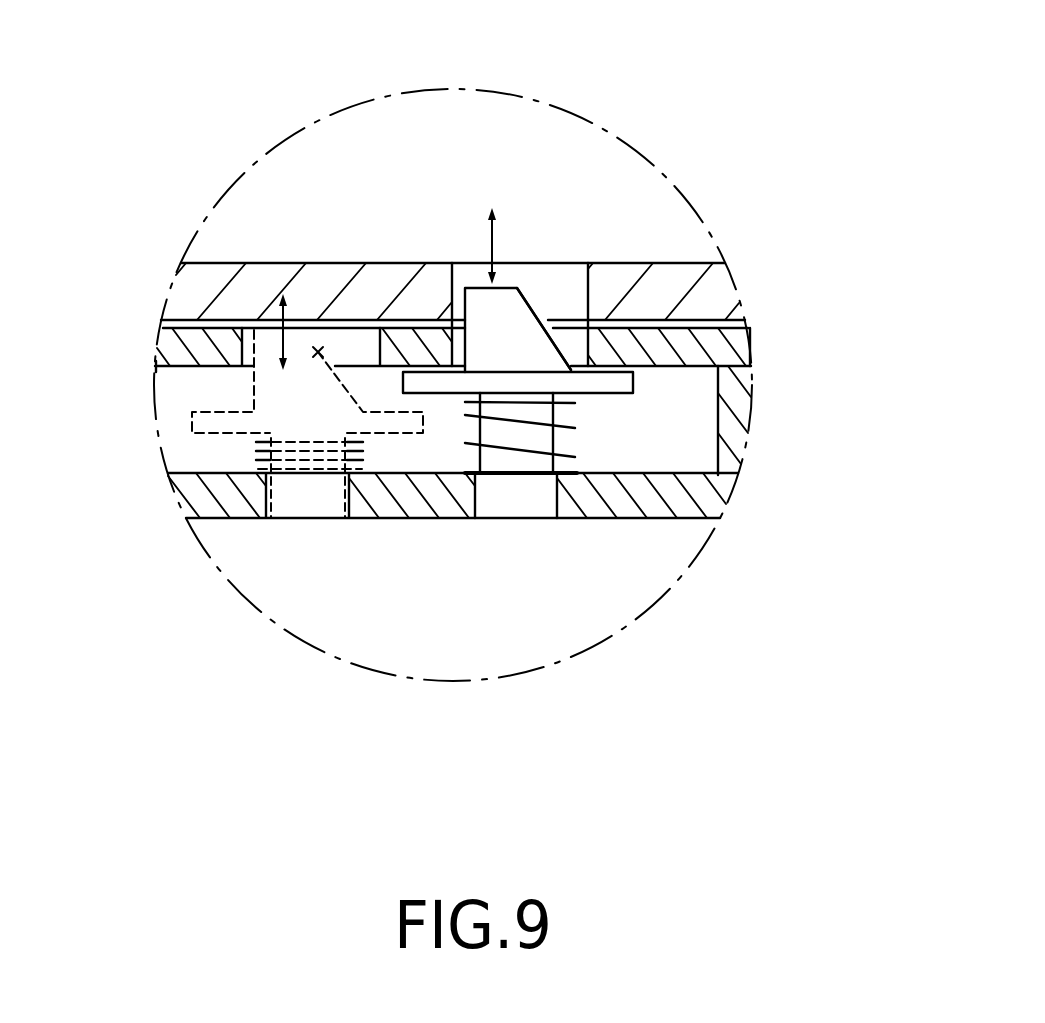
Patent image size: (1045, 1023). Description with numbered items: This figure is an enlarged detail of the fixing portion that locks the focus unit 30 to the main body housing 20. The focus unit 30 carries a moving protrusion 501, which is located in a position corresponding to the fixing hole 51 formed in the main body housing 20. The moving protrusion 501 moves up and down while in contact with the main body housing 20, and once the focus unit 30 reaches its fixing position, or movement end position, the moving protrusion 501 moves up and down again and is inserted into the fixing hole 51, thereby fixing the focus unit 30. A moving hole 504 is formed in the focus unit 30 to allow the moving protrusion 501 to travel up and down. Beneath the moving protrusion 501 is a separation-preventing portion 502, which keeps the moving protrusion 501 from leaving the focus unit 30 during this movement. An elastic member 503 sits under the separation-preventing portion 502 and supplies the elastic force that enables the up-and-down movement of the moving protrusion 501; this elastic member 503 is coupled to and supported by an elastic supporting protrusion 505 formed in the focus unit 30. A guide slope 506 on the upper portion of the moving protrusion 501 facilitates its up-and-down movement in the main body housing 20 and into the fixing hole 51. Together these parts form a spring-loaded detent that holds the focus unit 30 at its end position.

The main body housing 20 is at (192, 292).
The focus unit 30 is at (173, 349).
The fixing hole 51 is at (550, 278).
The moving protrusion 501 is at (532, 290).
The separation-preventing portion 502 is at (633, 383).
The elastic member 503 is at (575, 458).
The moving hole 504 is at (570, 345).
The elastic supporting protrusion 505 is at (517, 463).
The guide slope 506 is at (318, 352).